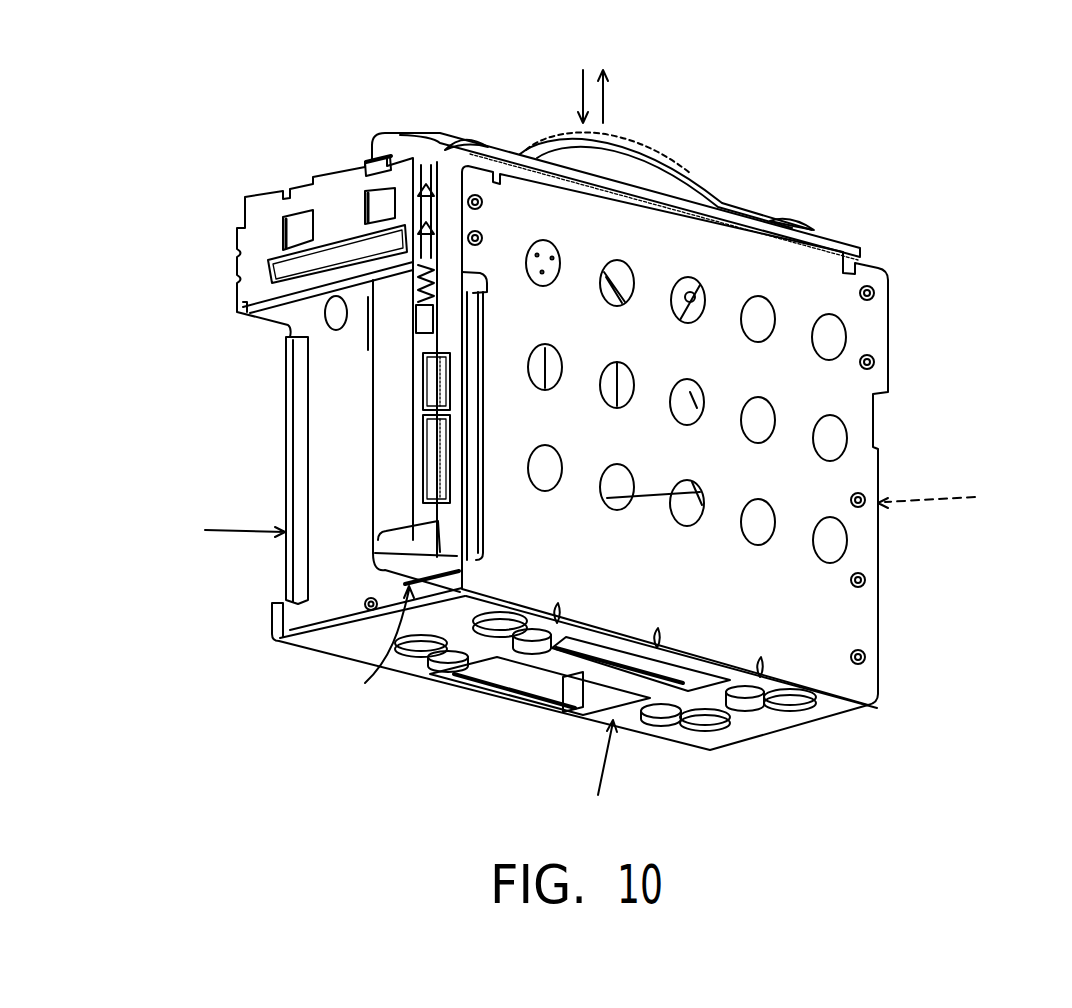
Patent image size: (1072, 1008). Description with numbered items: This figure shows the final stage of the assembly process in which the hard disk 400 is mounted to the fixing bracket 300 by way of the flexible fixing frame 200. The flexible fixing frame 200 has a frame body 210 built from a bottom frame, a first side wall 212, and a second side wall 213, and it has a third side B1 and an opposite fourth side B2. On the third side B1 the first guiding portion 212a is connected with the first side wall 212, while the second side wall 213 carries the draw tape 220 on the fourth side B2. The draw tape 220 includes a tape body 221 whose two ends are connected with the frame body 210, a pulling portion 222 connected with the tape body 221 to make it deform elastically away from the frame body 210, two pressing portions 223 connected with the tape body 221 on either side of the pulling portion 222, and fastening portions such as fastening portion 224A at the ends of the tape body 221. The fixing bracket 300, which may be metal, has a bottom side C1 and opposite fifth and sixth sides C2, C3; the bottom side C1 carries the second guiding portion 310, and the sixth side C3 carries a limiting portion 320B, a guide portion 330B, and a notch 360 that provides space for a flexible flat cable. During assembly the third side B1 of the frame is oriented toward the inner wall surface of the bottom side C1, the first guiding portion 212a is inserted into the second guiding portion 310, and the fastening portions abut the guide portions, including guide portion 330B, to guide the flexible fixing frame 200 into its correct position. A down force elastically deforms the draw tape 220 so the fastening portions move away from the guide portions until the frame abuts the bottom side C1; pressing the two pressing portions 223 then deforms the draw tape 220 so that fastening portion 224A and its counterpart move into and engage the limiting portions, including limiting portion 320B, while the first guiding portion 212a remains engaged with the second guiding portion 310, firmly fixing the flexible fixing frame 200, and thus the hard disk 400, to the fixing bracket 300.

The flexible fixing frame 200 is at (763, 194).
The frame body 210 is at (465, 434).
The first side wall 212 is at (412, 548).
The first guiding portion 212a is at (749, 704).
The second side wall 213 is at (455, 152).
The draw tape 220 is at (703, 127).
The tape body 221 is at (718, 190).
The pulling portion 222 is at (657, 164).
The pressing portion 223 is at (622, 171).
The fastening portion 224A is at (374, 165).
The fixing bracket 300 is at (838, 625).
The second guiding portion 310 is at (725, 692).
The limiting portion 320B is at (268, 266).
The guide portion 330B is at (366, 168).
The notch 360 is at (320, 467).
The hard disk 400 is at (418, 345).
The third side B1 is at (381, 653).
The fourth side B2 is at (617, 94).
The bottom side C1 is at (598, 775).
The fifth side C2 is at (944, 496).
The sixth side C3 is at (227, 528).